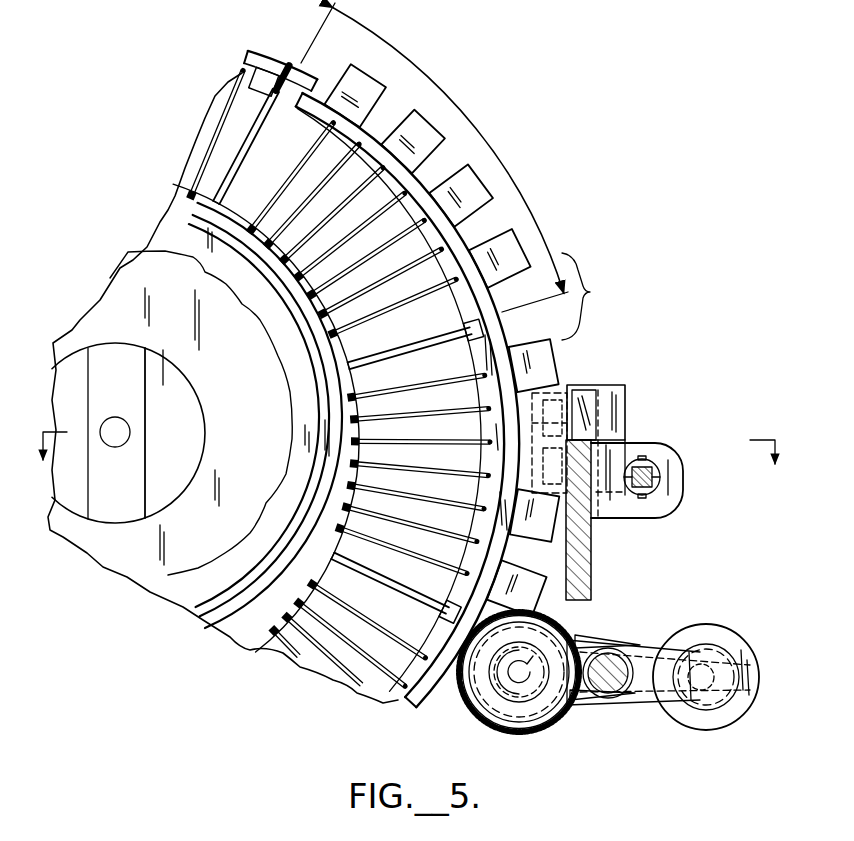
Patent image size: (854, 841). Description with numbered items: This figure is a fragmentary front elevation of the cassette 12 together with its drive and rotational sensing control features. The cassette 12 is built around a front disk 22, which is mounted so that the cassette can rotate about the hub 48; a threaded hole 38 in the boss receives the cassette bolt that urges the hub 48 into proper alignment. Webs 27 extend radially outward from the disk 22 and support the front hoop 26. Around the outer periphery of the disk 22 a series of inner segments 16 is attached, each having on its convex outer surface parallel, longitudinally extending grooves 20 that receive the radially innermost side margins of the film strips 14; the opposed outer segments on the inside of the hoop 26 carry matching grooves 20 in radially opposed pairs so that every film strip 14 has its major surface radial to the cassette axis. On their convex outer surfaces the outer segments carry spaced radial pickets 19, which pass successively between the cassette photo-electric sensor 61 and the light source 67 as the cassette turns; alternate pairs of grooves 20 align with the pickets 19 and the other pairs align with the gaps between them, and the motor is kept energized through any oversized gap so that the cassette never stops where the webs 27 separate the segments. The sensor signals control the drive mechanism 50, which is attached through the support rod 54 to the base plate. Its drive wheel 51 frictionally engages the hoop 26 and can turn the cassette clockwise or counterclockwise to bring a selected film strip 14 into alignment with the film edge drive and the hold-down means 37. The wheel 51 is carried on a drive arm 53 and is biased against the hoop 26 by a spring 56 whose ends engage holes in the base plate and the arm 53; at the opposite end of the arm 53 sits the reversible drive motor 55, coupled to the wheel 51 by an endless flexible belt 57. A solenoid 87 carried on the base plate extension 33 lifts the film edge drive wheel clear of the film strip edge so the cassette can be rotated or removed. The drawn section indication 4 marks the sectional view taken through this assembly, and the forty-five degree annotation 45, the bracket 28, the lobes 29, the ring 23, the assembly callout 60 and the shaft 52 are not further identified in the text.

The cassette 12 is at (146, 136).
The film strips 14 is at (369, 404).
The inner segments 16 is at (328, 323).
The pickets 19 is at (442, 340).
The grooves 20 is at (417, 377).
The front disk 22 is at (207, 636).
The rotor ring 23 is at (300, 485).
The front hoop 26 is at (390, 393).
The webs 27 is at (322, 359).
The gap 28 is at (590, 296).
The rotor lobes 29 is at (240, 563).
The base plate extension 33 is at (590, 548).
The hold-down means 37 is at (130, 350).
The threaded hole 38 is at (113, 447).
The 45 degree angle 45 is at (434, 157).
The hub 48 is at (198, 412).
The drive mechanism 50 is at (620, 606).
The drive wheel 51 is at (533, 615).
The gear shaft 52 is at (530, 658).
The drive arm 53 is at (645, 710).
The support rod 54 is at (614, 650).
The drive motor 55 is at (735, 632).
The spring 56 is at (630, 705).
The belt 57 is at (572, 630).
The mounting assembly 60 is at (617, 338).
The cassette photo-electric sensor 61 is at (558, 390).
The light source 67 is at (626, 410).
The solenoid 87 is at (652, 520).
The section line 4- 4 is at (407, 463).